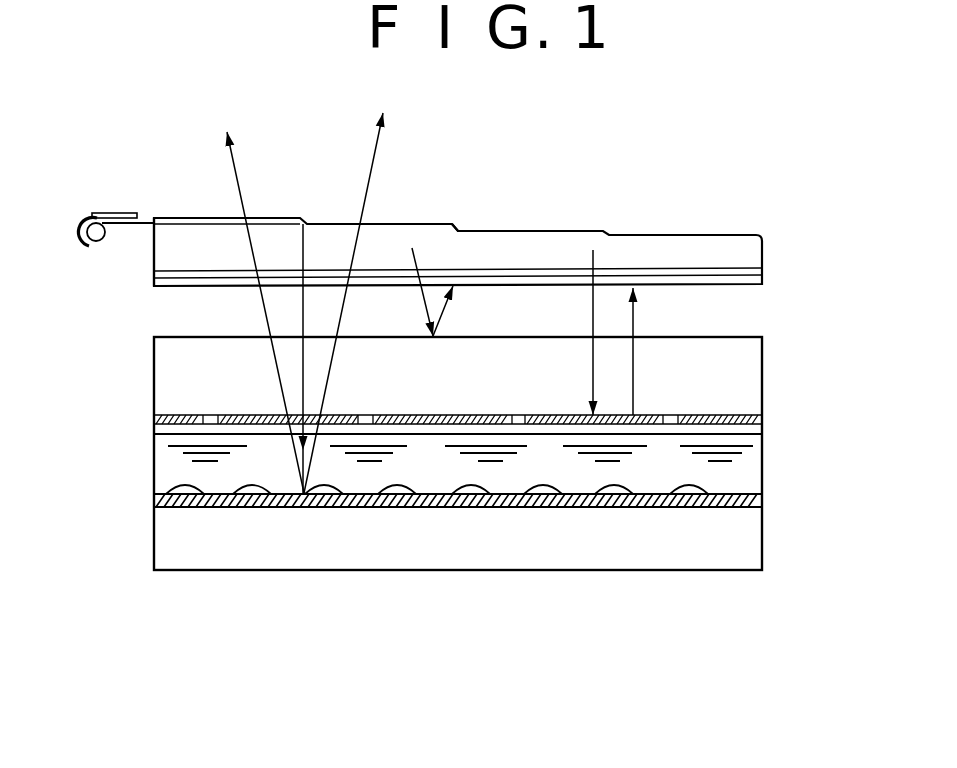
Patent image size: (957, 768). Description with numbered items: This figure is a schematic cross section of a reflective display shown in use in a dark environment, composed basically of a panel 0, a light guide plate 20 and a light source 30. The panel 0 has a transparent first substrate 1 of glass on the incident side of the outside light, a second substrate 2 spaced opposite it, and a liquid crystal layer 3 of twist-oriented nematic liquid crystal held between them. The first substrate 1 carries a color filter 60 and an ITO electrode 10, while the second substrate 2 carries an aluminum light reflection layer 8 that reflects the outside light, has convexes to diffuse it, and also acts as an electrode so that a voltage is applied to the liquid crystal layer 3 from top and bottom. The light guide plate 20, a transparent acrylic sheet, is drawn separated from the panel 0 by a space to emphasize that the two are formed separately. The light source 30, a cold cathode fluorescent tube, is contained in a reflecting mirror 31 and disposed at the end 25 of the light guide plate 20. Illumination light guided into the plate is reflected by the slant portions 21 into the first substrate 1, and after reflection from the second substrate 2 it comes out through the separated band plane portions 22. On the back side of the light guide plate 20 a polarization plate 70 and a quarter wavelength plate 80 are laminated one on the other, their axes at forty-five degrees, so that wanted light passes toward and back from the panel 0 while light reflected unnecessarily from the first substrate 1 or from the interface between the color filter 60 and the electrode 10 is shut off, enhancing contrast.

The panel 0 is at (454, 486).
The first substrate 1 is at (740, 357).
The second substrate 2 is at (745, 540).
The liquid crystal layer 3 is at (742, 478).
The light reflection layer 8 is at (188, 510).
The electrode 10 is at (742, 427).
The light guide plate 20 is at (457, 235).
The slant portions 21 is at (458, 226).
The plane portions 22 is at (427, 224).
The end 25 is at (153, 261).
The light source 30 is at (93, 217).
The reflecting mirror 31 is at (122, 211).
The color filter 60 is at (738, 411).
The polarization plate 70 is at (733, 271).
The quarter wavelength plate 80 is at (757, 278).